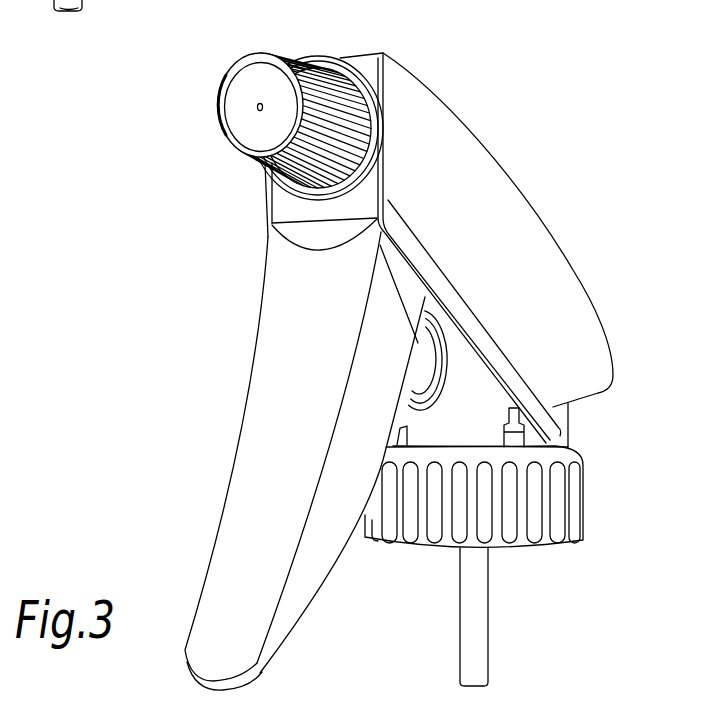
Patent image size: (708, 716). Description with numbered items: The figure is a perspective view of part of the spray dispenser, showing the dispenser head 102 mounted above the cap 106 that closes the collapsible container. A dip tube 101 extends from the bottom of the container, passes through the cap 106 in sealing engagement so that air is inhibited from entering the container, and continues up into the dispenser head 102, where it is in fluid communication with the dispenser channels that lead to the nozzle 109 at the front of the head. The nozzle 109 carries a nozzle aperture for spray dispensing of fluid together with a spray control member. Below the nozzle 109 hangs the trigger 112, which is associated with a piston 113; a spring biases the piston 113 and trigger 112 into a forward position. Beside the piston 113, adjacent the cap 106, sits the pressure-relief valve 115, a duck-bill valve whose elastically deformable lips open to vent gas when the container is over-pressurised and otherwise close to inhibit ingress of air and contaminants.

The nozzle 109 is at (322, 80).
The dispenser head 102 is at (573, 378).
The trigger 112 is at (280, 623).
The piston 113 is at (420, 367).
The pressure-relief valve 115 is at (517, 440).
The cap 106 is at (393, 518).
The dip tube 101 is at (480, 670).